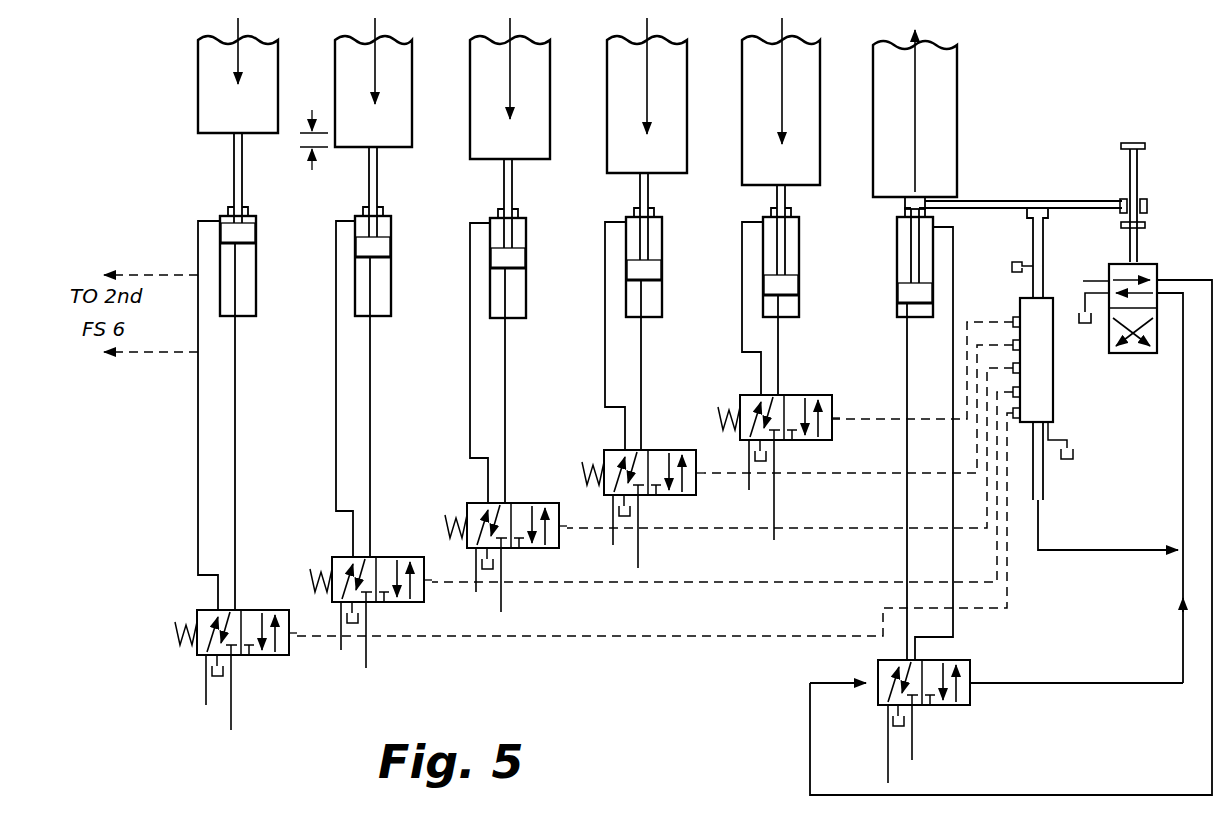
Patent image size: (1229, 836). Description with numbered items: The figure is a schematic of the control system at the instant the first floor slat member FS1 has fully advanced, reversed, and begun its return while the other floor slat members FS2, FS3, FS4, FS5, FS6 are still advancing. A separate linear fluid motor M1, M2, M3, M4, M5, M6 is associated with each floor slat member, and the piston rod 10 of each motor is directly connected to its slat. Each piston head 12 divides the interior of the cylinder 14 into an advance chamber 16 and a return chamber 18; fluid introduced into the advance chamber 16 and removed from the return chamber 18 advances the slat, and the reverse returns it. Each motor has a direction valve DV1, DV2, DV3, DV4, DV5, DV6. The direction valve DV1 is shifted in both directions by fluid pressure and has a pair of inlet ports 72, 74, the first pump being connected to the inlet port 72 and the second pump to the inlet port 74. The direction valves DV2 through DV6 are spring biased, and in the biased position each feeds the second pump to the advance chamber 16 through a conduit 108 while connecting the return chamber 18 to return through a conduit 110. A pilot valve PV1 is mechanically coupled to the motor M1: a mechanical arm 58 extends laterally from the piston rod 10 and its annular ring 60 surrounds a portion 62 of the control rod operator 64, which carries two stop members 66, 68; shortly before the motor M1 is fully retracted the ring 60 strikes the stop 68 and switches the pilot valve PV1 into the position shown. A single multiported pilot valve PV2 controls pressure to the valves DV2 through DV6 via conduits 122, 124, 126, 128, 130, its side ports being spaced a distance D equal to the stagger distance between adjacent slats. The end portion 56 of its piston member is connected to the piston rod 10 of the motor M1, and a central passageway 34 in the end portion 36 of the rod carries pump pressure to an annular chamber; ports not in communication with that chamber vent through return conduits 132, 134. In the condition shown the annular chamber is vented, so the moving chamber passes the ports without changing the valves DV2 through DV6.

The piston rod 10 is at (243, 178).
The piston head 12 is at (246, 230).
The motor chamber or cylinder 14 is at (256, 302).
The advance chamber 16 is at (228, 212).
The return chamber 18 is at (244, 308).
The conduit 108 is at (198, 478).
The conduit 110 is at (236, 455).
The conduit 122 is at (918, 418).
The conduit 124 is at (918, 472).
The conduit 126 is at (868, 521).
The conduit 128 is at (855, 577).
The conduit 130 is at (836, 637).
The return conduit 132 is at (1068, 440).
The return conduit 134 is at (1018, 266).
The central passageway 34 is at (1090, 551).
The end portion of piston rod 36 is at (1045, 478).
The end portion of piston member 56 is at (1046, 247).
The mechanical arm 58 is at (983, 200).
The annular ring 60 is at (1147, 204).
The portion of control rod operator 62 is at (1129, 162).
The control rod operator 64 is at (1148, 160).
The stop member 66 is at (1133, 143).
The stop member 68 is at (1145, 226).
The inlet port 72 is at (874, 705).
The inlet port 74 is at (933, 706).
The stagger distance D is at (300, 134).
The floor slat member FS1 is at (915, 113).
The floor slat member FS2 is at (781, 101).
The floor slat member FS3 is at (647, 95).
The floor slat member FS4 is at (510, 88).
The floor slat member FS5 is at (373, 82).
The floor slat member FS6 is at (238, 75).
The linear fluid motor M1 is at (897, 240).
The linear fluid motor M2 is at (800, 242).
The linear fluid motor M3 is at (665, 245).
The linear fluid motor M4 is at (528, 283).
The linear fluid motor M5 is at (392, 237).
The linear fluid motor M6 is at (254, 272).
The direction valve DV1 is at (968, 712).
The direction valve DV2 is at (785, 447).
The direction valve DV3 is at (640, 500).
The direction valve DV4 is at (512, 556).
The direction valve DV5 is at (392, 604).
The direction valve DV6 is at (255, 667).
The pilot valve PV1 is at (1142, 258).
The multiported pilot valve PV2 is at (1060, 384).